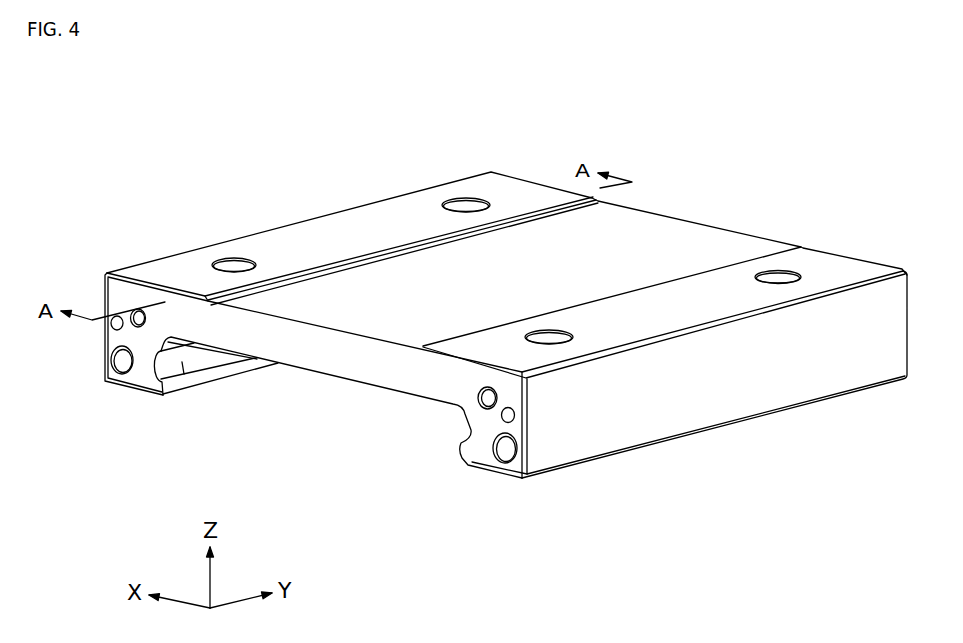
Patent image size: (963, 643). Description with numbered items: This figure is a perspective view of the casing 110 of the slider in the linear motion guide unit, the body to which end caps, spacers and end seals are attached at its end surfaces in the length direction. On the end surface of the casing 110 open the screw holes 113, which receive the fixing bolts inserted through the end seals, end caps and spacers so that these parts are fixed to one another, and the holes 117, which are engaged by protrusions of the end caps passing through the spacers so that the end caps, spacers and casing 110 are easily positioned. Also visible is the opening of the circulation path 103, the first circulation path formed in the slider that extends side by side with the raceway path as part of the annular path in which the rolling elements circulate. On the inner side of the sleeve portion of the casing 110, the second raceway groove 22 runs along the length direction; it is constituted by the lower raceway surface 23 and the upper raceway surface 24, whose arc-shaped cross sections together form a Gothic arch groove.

The casing 110 is at (506, 290).
The second raceway groove 22 is at (161, 374).
The lower raceway surface 23 is at (217, 361).
The upper raceway surface 24 is at (192, 353).
The screw hole 113 is at (480, 401).
The circulation path 103 is at (506, 457).
The hole 117 is at (516, 420).